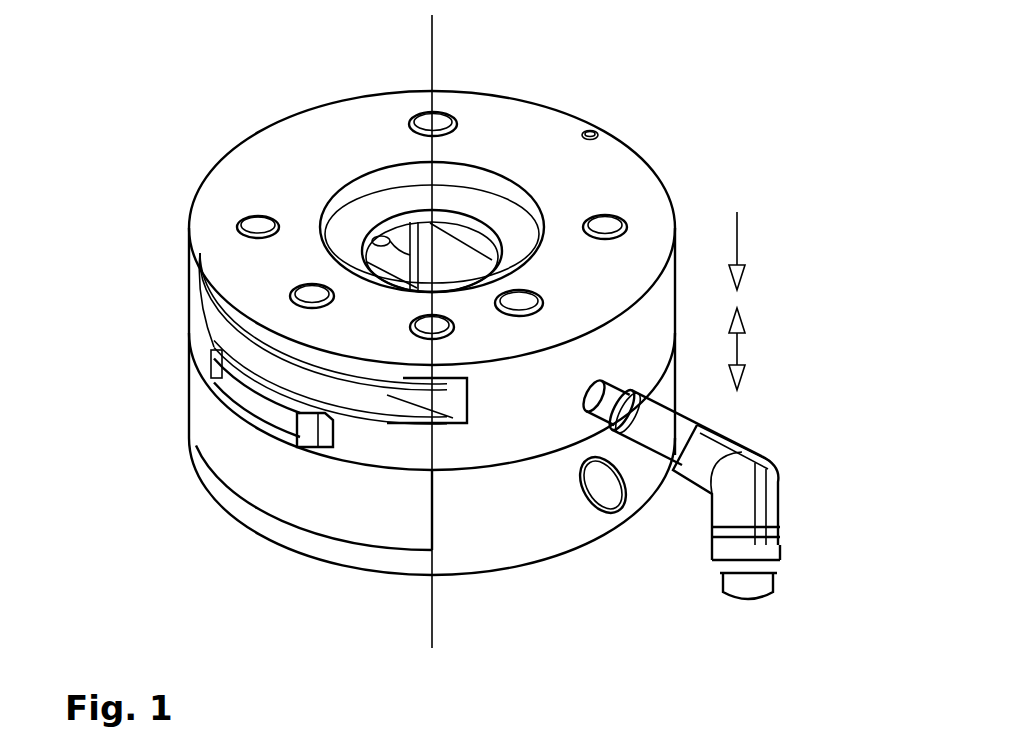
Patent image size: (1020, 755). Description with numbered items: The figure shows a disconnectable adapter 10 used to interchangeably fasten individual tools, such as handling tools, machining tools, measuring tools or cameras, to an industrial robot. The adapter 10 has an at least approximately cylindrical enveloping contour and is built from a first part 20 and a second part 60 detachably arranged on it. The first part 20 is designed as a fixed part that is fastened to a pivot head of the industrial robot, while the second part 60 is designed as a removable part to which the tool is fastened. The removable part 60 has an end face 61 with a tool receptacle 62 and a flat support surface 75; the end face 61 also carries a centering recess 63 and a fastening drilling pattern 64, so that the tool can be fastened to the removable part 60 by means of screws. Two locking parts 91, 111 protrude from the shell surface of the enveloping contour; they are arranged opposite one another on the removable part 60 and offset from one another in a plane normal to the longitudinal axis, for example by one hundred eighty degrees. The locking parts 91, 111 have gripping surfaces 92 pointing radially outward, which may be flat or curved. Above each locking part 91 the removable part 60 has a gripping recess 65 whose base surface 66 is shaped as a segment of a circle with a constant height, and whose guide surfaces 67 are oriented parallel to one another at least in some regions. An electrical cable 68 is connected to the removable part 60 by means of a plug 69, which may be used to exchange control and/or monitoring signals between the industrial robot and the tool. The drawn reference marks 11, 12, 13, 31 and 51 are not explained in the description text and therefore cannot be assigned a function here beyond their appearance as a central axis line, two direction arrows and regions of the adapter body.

The disconnectable adapter 10 is at (207, 142).
The central axis 11 is at (432, 52).
The upward direction 12 is at (737, 350).
The downward direction 13 is at (737, 250).
The first part 20 is at (464, 582).
The housing 31 is at (519, 515).
The lower segment 51 is at (333, 520).
The second part 60 is at (678, 192).
The end face 61 is at (562, 180).
The tool receptacle 62 is at (337, 207).
The centering recess 63 is at (602, 136).
The fastening drilling pattern 64 is at (237, 228).
The gripping recess 65 is at (190, 300).
The base surface 66 is at (229, 330).
The guide surface 67 is at (423, 393).
The electrical cable 68 is at (742, 595).
The plug 69 is at (620, 415).
The flat support surface 75 is at (522, 120).
The locking part 91 is at (237, 400).
The locking part 111 is at (187, 410).
The gripping surface 92 is at (282, 423).